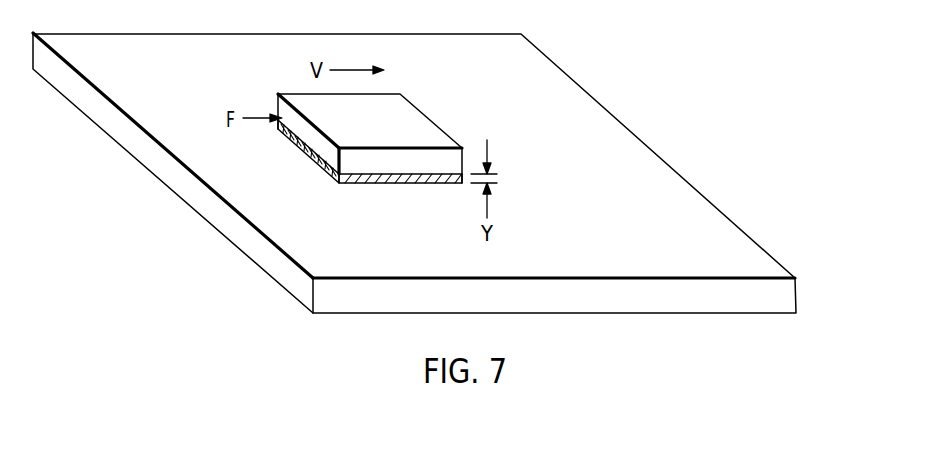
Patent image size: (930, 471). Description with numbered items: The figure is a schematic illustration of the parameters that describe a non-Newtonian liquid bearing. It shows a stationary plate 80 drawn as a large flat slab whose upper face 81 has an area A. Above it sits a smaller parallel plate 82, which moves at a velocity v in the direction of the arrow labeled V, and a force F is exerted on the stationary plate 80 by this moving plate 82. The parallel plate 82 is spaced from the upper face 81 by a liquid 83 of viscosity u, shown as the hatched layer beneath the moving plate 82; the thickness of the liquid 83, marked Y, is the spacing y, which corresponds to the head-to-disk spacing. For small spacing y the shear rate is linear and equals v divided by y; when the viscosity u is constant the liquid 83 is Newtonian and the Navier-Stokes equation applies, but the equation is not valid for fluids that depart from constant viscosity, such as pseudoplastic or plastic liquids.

The stationary plate 80 is at (797, 297).
The upper face 81 is at (703, 225).
The parallel plate 82 is at (400, 123).
The liquid 83 is at (316, 174).